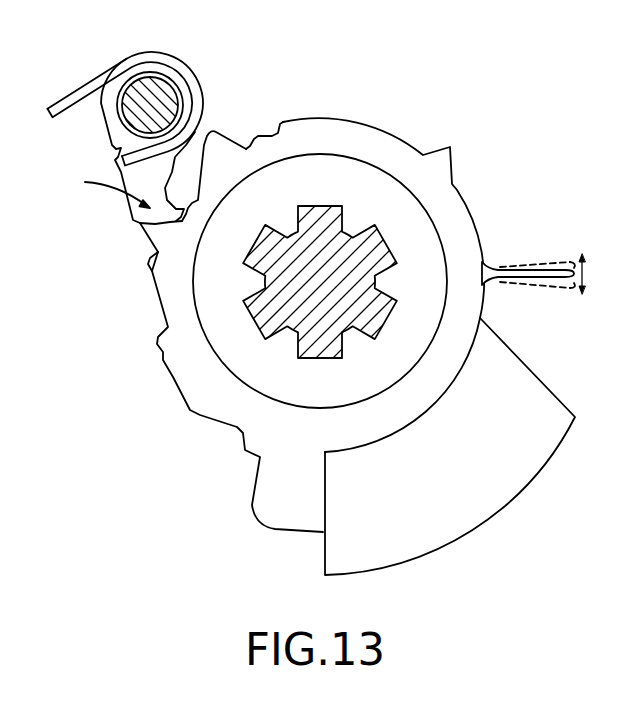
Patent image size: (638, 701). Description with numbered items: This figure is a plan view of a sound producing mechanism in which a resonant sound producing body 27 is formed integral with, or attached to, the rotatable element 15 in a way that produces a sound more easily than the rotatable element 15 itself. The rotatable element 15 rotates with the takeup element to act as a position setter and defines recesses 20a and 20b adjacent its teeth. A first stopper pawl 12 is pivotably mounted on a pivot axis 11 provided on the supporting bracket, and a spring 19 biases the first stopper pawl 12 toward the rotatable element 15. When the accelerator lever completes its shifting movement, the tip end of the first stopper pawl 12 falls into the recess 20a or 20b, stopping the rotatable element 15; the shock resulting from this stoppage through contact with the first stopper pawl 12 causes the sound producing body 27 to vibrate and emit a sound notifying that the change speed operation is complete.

The pivot axis 11 is at (157, 92).
The first stopper pawl 12 is at (140, 221).
The rotatable element 15 is at (187, 367).
The spring 19 is at (116, 76).
The recess 20a is at (162, 225).
The recess 20b is at (242, 150).
The resonant sound producing body 27 is at (571, 268).